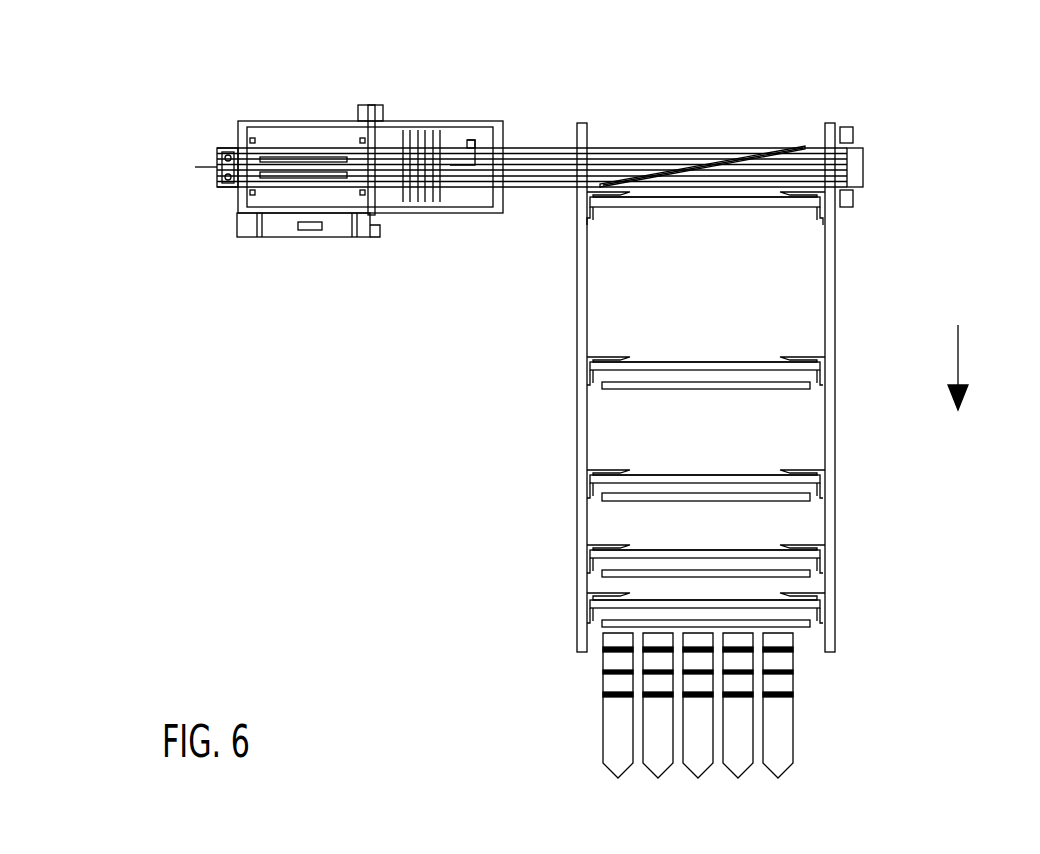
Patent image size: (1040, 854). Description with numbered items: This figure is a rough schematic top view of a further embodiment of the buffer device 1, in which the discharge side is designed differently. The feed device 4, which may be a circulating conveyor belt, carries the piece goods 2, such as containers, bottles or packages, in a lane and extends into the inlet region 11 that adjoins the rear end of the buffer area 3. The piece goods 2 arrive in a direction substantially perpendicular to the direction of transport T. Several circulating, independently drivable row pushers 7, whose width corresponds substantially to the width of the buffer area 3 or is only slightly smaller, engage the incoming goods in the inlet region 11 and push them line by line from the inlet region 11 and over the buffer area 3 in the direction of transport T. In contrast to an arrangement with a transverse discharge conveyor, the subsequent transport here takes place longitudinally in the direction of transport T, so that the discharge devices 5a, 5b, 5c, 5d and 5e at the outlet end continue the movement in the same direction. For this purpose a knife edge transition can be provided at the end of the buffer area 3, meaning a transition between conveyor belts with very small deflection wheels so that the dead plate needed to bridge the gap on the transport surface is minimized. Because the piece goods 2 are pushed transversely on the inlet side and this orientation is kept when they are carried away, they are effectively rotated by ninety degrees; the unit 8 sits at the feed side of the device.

The buffer device 1 is at (605, 436).
The piece goods 2 is at (643, 170).
The buffer area 3 is at (698, 298).
The feed device 4 is at (540, 147).
The discharge device 5a is at (777, 762).
The discharge device 5b is at (737, 762).
The discharge device 5c is at (697, 762).
The discharge device 5d is at (657, 762).
The discharge device 5e is at (617, 762).
The row pusher 7 is at (782, 205).
The drive unit 8 is at (312, 122).
The inlet region 11 is at (700, 147).